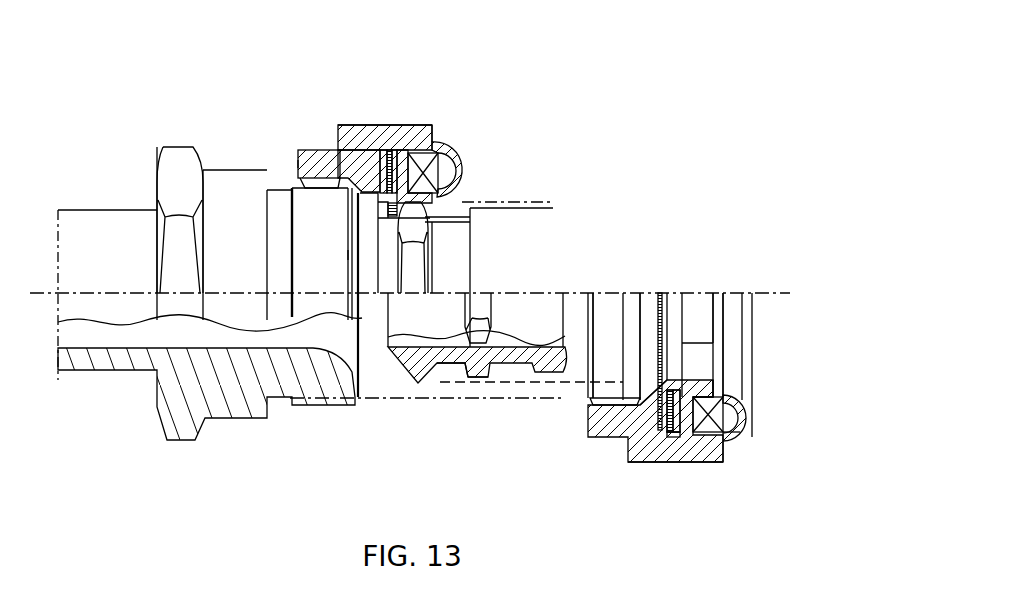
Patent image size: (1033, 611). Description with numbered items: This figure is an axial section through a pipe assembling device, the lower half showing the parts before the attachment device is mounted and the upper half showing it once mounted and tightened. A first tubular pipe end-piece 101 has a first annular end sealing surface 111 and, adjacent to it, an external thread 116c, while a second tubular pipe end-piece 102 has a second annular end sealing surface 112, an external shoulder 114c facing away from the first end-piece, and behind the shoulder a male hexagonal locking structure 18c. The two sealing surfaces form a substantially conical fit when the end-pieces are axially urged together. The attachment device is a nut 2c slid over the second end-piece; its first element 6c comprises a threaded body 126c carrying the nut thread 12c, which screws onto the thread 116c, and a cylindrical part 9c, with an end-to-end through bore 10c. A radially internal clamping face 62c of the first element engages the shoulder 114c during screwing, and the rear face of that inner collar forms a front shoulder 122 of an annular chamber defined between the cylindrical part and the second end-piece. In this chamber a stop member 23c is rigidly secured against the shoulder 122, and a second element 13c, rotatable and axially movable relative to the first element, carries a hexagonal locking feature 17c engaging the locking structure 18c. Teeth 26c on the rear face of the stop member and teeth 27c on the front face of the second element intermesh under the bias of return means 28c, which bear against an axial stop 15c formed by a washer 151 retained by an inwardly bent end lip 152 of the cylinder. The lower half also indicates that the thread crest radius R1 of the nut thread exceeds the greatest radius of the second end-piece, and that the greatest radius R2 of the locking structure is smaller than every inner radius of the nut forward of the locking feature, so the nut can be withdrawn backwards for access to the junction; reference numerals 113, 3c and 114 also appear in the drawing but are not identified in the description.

The first tubular pipe end-piece 101 is at (100, 207).
The hexagonal nut portion 113 is at (178, 147).
The external thread 116c is at (320, 400).
The body 3c is at (306, 256).
The nut thread 12c is at (303, 182).
The threaded body 126c is at (315, 155).
The first element 6c is at (340, 122).
The nut 2c is at (352, 112).
The external shoulder 114c is at (380, 150).
The cylindrical part 9c is at (420, 127).
The axial stop 15c is at (545, 105).
The washer 151 is at (460, 182).
The end lip 152 is at (437, 147).
The second tubular pipe end-piece 102 is at (535, 208).
The locking structure 18c is at (420, 268).
The greatest radius of the locking structure R2 is at (477, 372).
The second annular end sealing surface 112 is at (405, 380).
The groove 114 is at (437, 370).
The first annular end sealing surface 111 is at (360, 375).
The through bore 10c is at (757, 313).
The locking feature 17c is at (703, 312).
The clamping face 62c is at (650, 390).
The thread crest radius R1 is at (613, 397).
The front shoulder 122 is at (660, 433).
The stop member 23c is at (677, 444).
The teeth of the stop member 26c is at (675, 437).
The teeth of the second element 27c is at (673, 434).
The second element 13c is at (720, 450).
The return means 28c is at (733, 438).